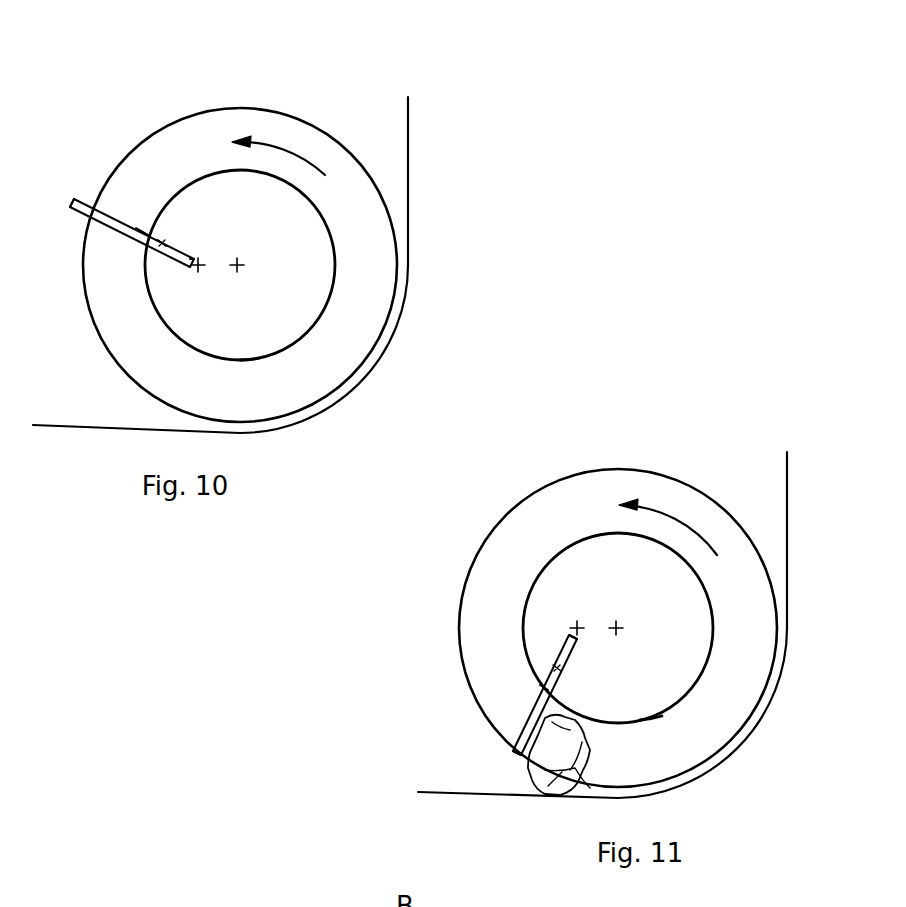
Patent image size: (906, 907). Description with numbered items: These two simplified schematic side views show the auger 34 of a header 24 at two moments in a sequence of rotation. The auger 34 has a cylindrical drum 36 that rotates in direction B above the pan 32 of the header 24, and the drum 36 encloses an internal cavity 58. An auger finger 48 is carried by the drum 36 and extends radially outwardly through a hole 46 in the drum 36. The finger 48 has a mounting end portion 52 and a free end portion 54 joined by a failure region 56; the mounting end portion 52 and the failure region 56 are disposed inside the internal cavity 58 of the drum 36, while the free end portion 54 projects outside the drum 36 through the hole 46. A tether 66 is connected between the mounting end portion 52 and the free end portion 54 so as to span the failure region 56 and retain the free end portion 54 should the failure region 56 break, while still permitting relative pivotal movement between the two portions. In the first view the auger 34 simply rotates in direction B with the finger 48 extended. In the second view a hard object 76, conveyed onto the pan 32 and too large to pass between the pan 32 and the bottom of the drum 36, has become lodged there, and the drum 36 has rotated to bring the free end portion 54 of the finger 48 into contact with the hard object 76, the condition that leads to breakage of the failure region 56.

In FIG. 10, the header 24 is at (304, 219).
In FIG. 11, the header 24 is at (587, 610).
In FIG. 10, the pan 32 is at (220, 265).
In FIG. 11, the pan 32 is at (425, 790).
In FIG. 10, the auger 34 is at (392, 219).
In FIG. 11, the auger 34 is at (730, 515).
In FIG. 10, the drum 36 is at (333, 277).
In FIG. 11, the drum 36 is at (707, 593).
In FIG. 10, the hole 46 is at (148, 235).
In FIG. 11, the hole 46 is at (528, 685).
In FIG. 10, the auger finger 48 is at (85, 202).
In FIG. 11, the auger finger 48 is at (538, 700).
In FIG. 10, the mounting end portion 52 is at (187, 262).
In FIG. 11, the mounting end portion 52 is at (563, 637).
In FIG. 10, the free end portion 54 is at (107, 227).
In FIG. 11, the free end portion 54 is at (517, 728).
In FIG. 10, the failure region 56 is at (168, 235).
In FIG. 10, the internal cavity 58 is at (255, 349).
In FIG. 11, the internal cavity 58 is at (660, 707).
In FIG. 10, the tether 66 is at (162, 243).
In FIG. 11, the tether 66 is at (557, 668).
In FIG. 11, the hard object 76 is at (522, 796).
In FIG. 10, the direction of rotation B is at (281, 147).
In FIG. 11, the direction of rotation B is at (670, 512).